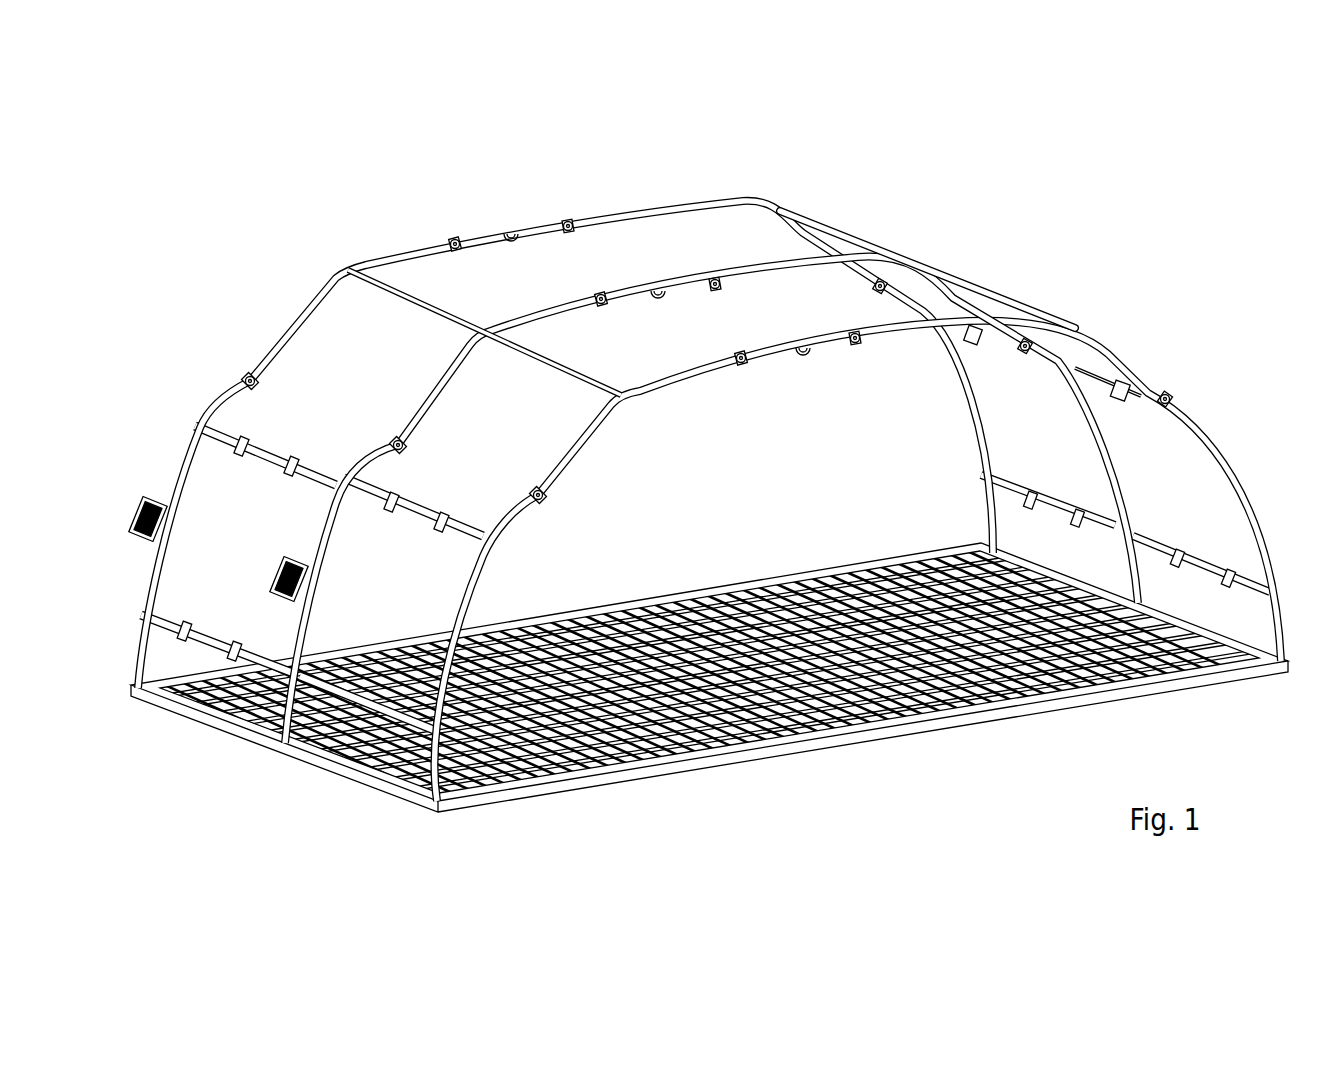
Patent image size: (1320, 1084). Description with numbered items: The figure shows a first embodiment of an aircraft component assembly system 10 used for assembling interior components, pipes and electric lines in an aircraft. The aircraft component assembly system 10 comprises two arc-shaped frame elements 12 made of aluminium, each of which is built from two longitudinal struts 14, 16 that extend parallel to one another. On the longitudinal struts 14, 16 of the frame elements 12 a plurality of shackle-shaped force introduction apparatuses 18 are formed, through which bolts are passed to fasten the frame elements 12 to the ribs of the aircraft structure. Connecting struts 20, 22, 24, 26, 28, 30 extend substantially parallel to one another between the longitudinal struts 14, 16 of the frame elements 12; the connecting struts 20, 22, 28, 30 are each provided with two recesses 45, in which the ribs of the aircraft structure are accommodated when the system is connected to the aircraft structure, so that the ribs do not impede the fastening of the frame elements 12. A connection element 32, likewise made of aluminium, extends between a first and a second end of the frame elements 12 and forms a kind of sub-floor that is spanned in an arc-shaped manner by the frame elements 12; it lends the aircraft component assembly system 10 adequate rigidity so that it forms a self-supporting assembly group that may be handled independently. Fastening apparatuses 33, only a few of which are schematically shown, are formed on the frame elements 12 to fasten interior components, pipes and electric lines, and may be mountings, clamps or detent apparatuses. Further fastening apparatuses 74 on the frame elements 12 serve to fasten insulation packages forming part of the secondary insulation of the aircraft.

The aircraft component assembly system 10 is at (1135, 266).
The arc-shaped frame element 12 is at (398, 242).
The longitudinal strut 14 is at (415, 388).
The longitudinal strut 16 is at (296, 312).
The force introduction apparatus 18 is at (236, 370).
The connecting strut 20 is at (203, 637).
The connecting strut 22 is at (256, 455).
The connecting strut 24 is at (416, 300).
The connecting strut 26 is at (835, 218).
The connecting strut 28 is at (972, 345).
The connecting strut 30 is at (1062, 505).
The connection element 32 is at (893, 722).
The fastening apparatus 33 is at (505, 242).
The recess 45 is at (240, 432).
The fastening apparatus 74 is at (130, 496).